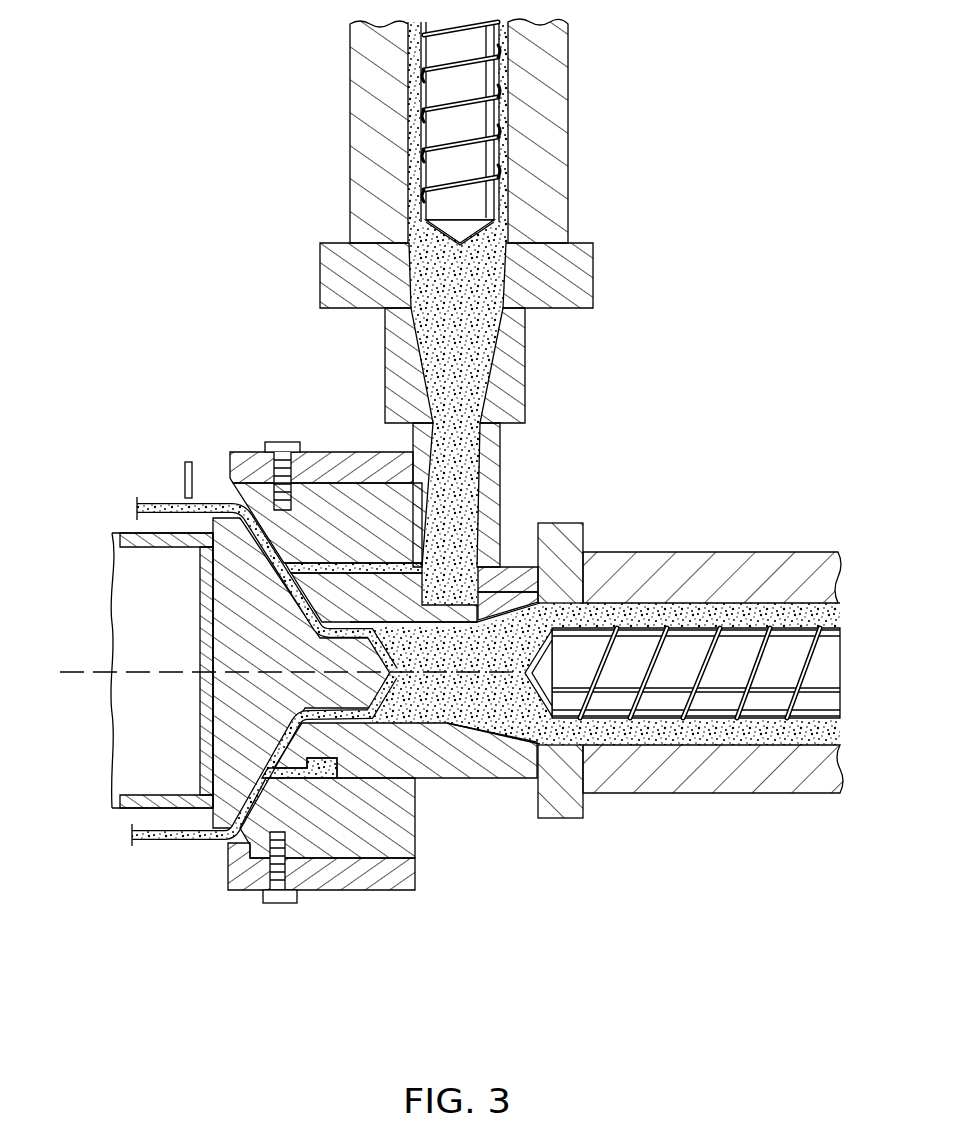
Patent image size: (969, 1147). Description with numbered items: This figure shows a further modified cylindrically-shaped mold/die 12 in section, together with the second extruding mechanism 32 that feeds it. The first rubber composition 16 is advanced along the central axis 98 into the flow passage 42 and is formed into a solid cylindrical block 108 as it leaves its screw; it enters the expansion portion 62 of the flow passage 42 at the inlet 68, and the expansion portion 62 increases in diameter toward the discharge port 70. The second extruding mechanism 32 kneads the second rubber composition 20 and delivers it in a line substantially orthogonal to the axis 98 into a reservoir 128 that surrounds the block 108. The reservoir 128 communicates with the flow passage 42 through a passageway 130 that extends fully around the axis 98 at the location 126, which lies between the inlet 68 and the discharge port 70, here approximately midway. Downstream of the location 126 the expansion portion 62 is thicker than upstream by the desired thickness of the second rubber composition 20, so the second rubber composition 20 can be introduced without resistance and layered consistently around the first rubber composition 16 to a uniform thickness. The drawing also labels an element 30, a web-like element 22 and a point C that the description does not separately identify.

The second extruding mechanism 32 is at (596, 158).
The cylindrically-shaped mold/die 12 is at (715, 351).
The second rubber composition 20 is at (455, 372).
The passageway 130 is at (467, 592).
The discharge port 70 is at (220, 496).
The inlet 68 is at (335, 577).
The contact point C is at (280, 590).
The film web 22 is at (180, 480).
The location 126 is at (273, 593).
The central axis 98 is at (73, 672).
The flow passage 42 is at (283, 745).
The expansion portion 62 is at (270, 757).
The block 108 is at (430, 693).
The first rubber composition 16 is at (493, 735).
The reservoir 128 is at (583, 585).
The screw extruder barrel 30 is at (788, 546).